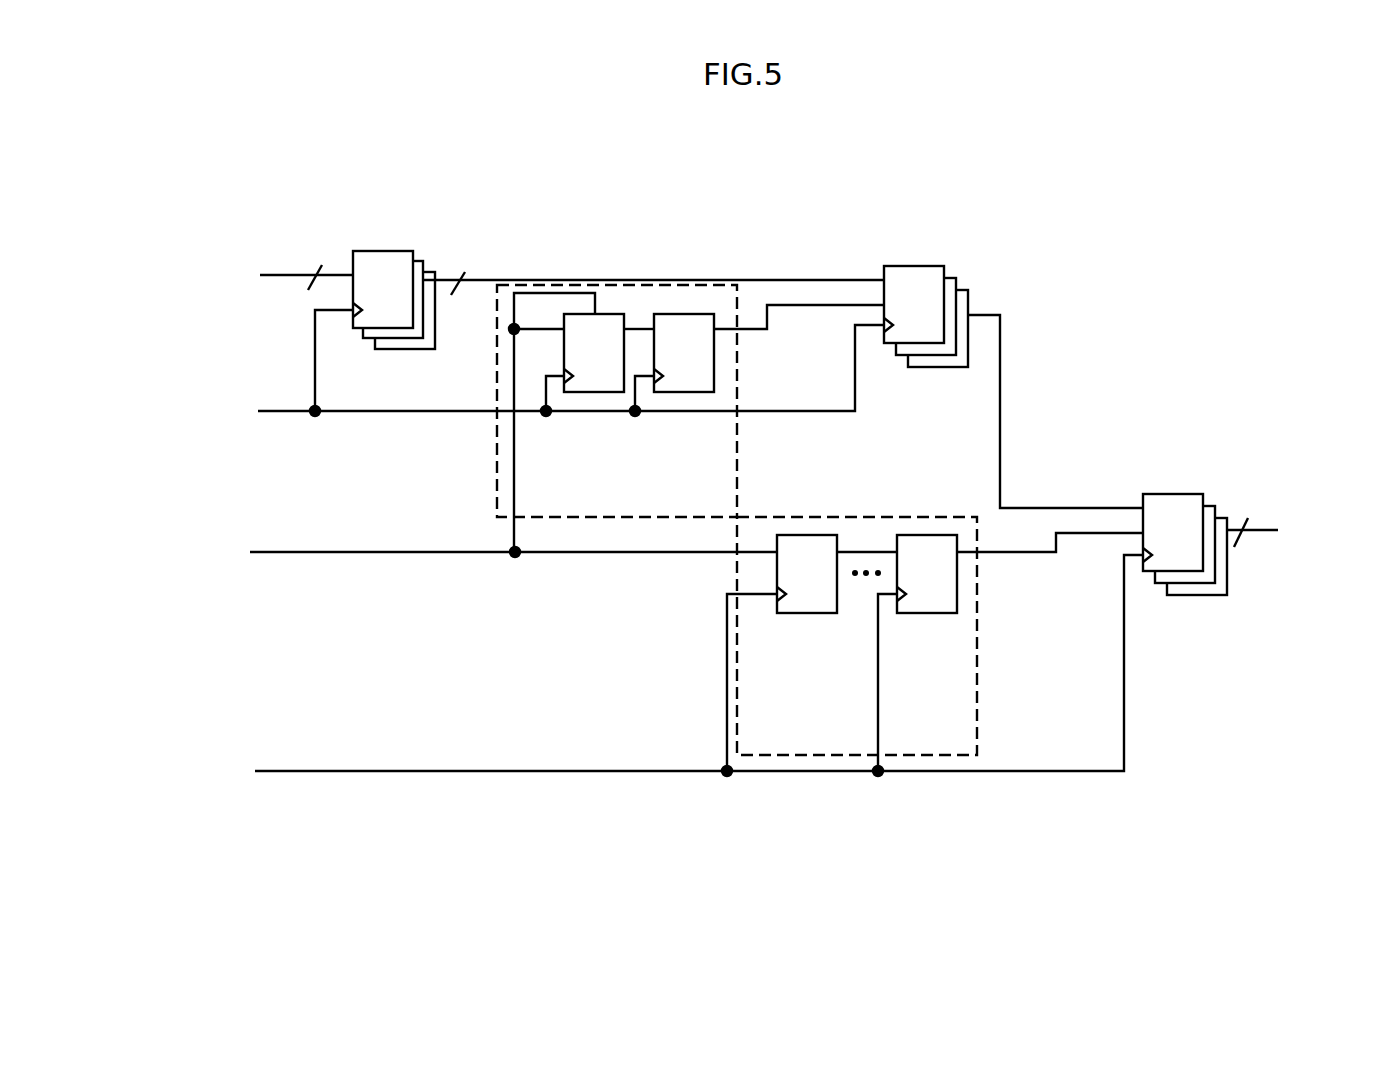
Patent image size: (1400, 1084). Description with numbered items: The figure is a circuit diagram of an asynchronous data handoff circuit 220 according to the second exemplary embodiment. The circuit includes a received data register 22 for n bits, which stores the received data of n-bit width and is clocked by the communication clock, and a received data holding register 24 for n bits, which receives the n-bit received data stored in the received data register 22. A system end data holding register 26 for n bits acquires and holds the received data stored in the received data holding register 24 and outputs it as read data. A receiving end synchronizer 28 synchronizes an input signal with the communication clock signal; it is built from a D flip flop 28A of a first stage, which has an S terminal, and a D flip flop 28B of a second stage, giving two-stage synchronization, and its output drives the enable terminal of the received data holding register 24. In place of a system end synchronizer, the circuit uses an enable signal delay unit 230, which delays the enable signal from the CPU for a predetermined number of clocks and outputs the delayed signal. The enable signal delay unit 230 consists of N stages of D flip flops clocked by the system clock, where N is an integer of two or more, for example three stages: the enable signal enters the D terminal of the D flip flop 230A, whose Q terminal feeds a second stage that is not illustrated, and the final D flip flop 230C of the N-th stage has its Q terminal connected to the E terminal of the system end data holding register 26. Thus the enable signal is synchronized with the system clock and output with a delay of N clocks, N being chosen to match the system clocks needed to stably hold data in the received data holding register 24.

The asynchronous data handoff circuit 220 is at (705, 170).
The received data register 22 is at (395, 372).
The received data holding register 24 is at (928, 342).
The system end data holding register 26 is at (1117, 500).
The receiving end synchronizer 28 is at (617, 472).
The D flip flop of first stage 28A is at (587, 413).
The D flip flop of second stage 28B is at (687, 413).
The enable signal delay unit 230 is at (852, 603).
The D flip flop of first stage 230A is at (803, 637).
The D flip flop of third stage 230C is at (922, 637).